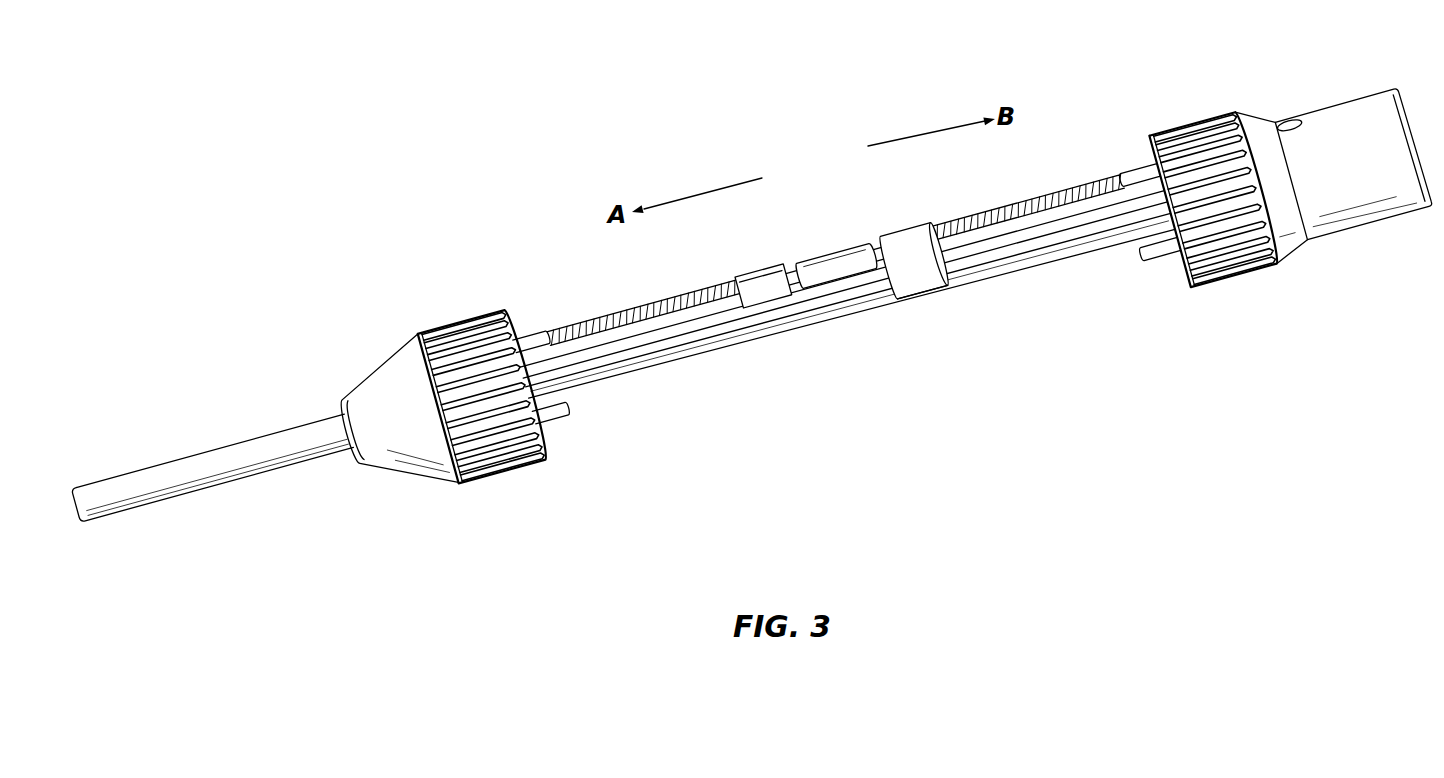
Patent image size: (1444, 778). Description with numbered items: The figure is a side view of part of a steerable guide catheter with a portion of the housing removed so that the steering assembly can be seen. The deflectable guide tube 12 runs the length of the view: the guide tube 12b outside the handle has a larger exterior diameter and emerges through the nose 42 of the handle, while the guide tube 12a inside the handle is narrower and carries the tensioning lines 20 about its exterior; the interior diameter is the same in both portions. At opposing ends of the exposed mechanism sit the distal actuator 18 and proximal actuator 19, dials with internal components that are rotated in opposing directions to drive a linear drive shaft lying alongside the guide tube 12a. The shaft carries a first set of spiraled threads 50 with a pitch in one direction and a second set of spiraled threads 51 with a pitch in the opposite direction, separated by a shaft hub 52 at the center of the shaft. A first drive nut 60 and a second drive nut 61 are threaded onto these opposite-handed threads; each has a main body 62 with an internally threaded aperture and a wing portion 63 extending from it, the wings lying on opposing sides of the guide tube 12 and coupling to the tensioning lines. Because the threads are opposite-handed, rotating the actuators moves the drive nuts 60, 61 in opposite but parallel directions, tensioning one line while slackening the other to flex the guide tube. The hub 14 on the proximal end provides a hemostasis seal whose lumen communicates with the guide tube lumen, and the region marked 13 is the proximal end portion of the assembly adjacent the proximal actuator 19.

The guide tube 12 is at (622, 402).
The guide tube portion inside the handle 12a is at (740, 350).
The guide tube portion outside the handle 12b is at (106, 486).
The proximal end portion 13 is at (1243, 330).
The hub 14 is at (1367, 212).
The distal actuator 18 is at (462, 316).
The proximal actuator 19 is at (1195, 122).
The tensioning lines 20 is at (639, 366).
The nose 42 is at (380, 392).
The first set of spiraled threads 50 is at (607, 320).
The second set of spiraled threads 51 is at (1025, 210).
The shaft hub 52 is at (832, 262).
The first drive nut 60 is at (753, 257).
The second drive nut 61 is at (907, 212).
The main body 62 is at (941, 286).
The wing portion 63 is at (915, 290).